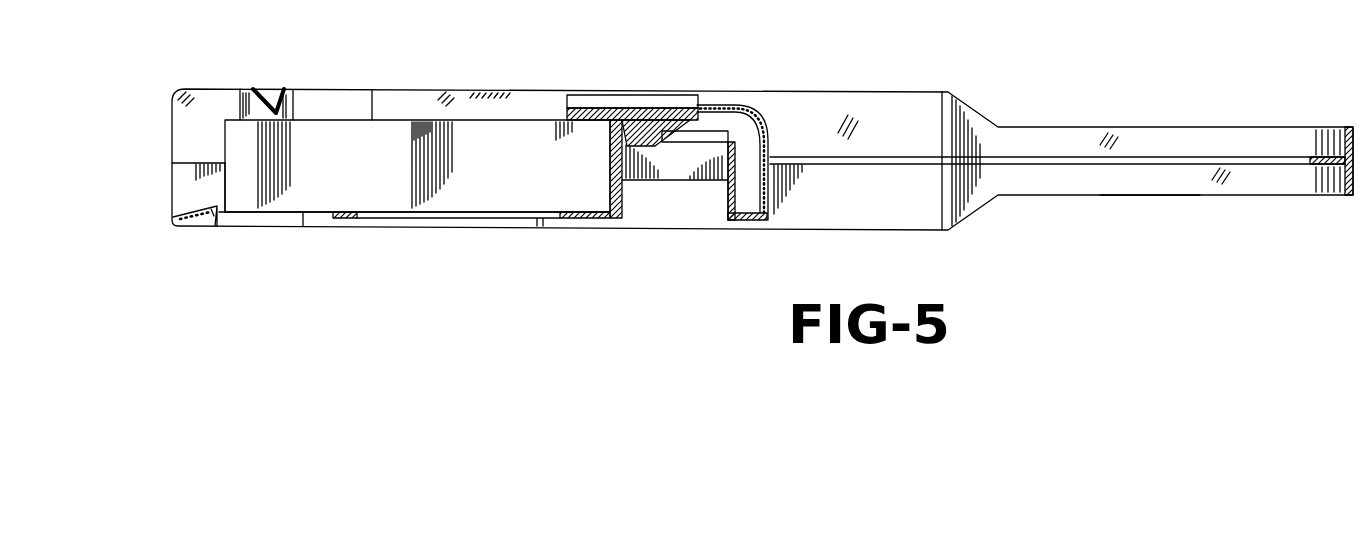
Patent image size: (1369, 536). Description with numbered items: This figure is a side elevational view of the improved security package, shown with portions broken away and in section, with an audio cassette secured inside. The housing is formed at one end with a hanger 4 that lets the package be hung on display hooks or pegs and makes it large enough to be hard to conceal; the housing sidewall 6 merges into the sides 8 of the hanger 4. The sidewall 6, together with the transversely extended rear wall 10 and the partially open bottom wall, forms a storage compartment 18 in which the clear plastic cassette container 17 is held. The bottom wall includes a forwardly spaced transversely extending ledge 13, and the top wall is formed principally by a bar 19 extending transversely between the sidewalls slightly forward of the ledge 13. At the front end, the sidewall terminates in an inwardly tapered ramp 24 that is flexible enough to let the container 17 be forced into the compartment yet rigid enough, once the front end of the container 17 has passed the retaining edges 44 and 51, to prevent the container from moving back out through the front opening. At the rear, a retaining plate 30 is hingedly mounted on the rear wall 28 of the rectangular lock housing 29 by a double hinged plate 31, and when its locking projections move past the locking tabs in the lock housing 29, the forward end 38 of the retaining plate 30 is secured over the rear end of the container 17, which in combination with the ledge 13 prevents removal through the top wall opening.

The hanger 4 is at (1133, 195).
The sidewall 6 is at (452, 105).
The sides of hanger 8 is at (1222, 133).
The rear wall 10 is at (612, 173).
The ledge 13 is at (325, 213).
The cassette container 17 is at (360, 187).
The storage compartment 18 is at (343, 146).
The bar 19 is at (267, 87).
The ramp 24 is at (192, 186).
The rear wall of lock housing 28 is at (727, 198).
The lock housing 29 is at (665, 193).
The retaining plate 30 is at (637, 143).
The double hinged plate 31 is at (755, 138).
The forward end of retaining plate 38 is at (587, 110).
The retaining edge 44 is at (228, 185).
The retaining edge 51 is at (226, 219).